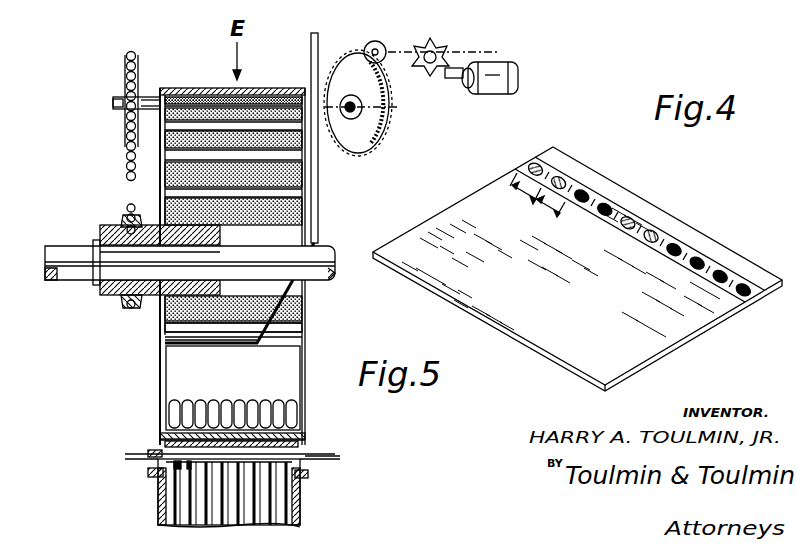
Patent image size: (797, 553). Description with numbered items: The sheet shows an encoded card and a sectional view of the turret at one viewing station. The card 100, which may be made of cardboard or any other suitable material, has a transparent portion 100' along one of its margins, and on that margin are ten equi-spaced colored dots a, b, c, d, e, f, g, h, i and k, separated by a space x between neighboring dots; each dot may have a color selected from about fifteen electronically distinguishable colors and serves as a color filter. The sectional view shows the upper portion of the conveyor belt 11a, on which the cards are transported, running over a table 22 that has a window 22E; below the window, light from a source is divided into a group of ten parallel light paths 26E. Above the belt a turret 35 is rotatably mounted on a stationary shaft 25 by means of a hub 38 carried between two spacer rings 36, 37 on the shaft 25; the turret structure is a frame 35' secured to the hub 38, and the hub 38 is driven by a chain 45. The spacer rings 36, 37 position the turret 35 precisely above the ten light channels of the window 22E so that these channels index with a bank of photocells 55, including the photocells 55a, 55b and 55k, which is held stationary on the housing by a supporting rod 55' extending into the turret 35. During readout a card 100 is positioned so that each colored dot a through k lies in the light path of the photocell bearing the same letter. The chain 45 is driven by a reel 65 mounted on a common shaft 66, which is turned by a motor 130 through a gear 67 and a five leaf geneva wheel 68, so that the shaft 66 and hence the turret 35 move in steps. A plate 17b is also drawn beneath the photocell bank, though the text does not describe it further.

In FIG. 5, the turret 35 is at (232, 247).
In FIG. 5, the frame 35' is at (197, 316).
In FIG. 5, the spacer ring 37 is at (232, 243).
In FIG. 5, the hub 38 is at (108, 228).
In FIG. 5, the stationary shaft 25 is at (318, 247).
In FIG. 5, the spacer ring 36 is at (94, 242).
In FIG. 5, the reel 65 is at (130, 58).
In FIG. 5, the chain 45 is at (126, 163).
In FIG. 5, the common shaft 66 is at (116, 100).
In FIG. 5, the gear 67 is at (384, 112).
In FIG. 5, the five leaf geneva wheel 68 is at (442, 44).
In FIG. 5, the motor 130 is at (508, 64).
In FIG. 5, the bank of photocells 55 is at (199, 385).
In FIG. 5, the photocell 55a is at (172, 412).
In FIG. 5, the photocell 55b is at (186, 412).
In FIG. 5, the photocell 55k is at (292, 412).
In FIG. 5, the supporting rod 55' is at (258, 315).
In FIG. 5, the insulating plate 17b is at (160, 442).
In FIG. 5, the conveyor belt 11a is at (118, 455).
In FIG. 5, the card 100 is at (263, 425).
In FIG. 4, the card 100 is at (577, 279).
In FIG. 4, the transparent portion 100' is at (656, 243).
In FIG. 5, the space x is at (178, 472).
In FIG. 4, the space x is at (537, 197).
In FIG. 5, the table 22 is at (320, 470).
In FIG. 5, the window 22E is at (340, 456).
In FIG. 5, the light paths 26E is at (300, 530).
In FIG. 4, the colored dot a is at (541, 165).
In FIG. 4, the colored dot b is at (564, 178).
In FIG. 4, the colored dot c is at (587, 192).
In FIG. 4, the colored dot d is at (610, 205).
In FIG. 4, the colored dot e is at (633, 219).
In FIG. 4, the colored dot f is at (656, 232).
In FIG. 4, the colored dot g is at (679, 246).
In FIG. 4, the colored dot h is at (702, 259).
In FIG. 4, the colored dot i is at (725, 273).
In FIG. 4, the colored dot k is at (748, 286).